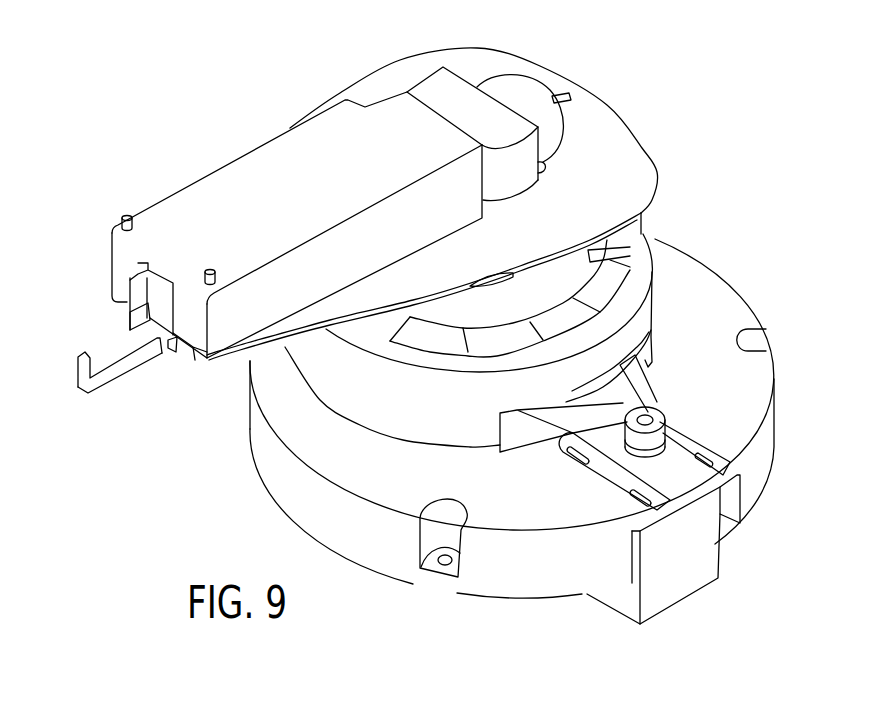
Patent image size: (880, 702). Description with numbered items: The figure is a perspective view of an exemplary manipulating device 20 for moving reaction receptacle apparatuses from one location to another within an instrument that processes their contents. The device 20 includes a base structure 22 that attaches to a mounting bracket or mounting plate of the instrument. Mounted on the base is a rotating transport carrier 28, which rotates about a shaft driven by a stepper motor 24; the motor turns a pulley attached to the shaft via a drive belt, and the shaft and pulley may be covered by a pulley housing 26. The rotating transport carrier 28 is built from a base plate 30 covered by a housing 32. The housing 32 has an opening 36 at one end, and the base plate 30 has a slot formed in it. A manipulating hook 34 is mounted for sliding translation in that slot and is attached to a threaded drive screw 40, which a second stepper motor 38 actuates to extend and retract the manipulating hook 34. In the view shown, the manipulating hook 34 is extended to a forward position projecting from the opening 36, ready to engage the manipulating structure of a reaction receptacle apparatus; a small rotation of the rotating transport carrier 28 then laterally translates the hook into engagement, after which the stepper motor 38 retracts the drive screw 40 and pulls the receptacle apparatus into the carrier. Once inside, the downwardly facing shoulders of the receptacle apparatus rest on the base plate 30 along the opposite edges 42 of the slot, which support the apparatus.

The manipulating device 20 is at (730, 167).
The base structure 22 is at (740, 374).
The stepper motor 24 is at (707, 541).
The pulley housing 26 is at (657, 263).
The rotating transport carrier 28 is at (162, 193).
The base plate 30 is at (630, 163).
The housing 32 is at (227, 183).
The manipulating hook 34 is at (128, 385).
The opening 36 is at (133, 298).
The stepper motor 38 is at (516, 86).
The threaded drive screw 40 is at (566, 97).
The opposite edges of the slot 42 is at (137, 315).